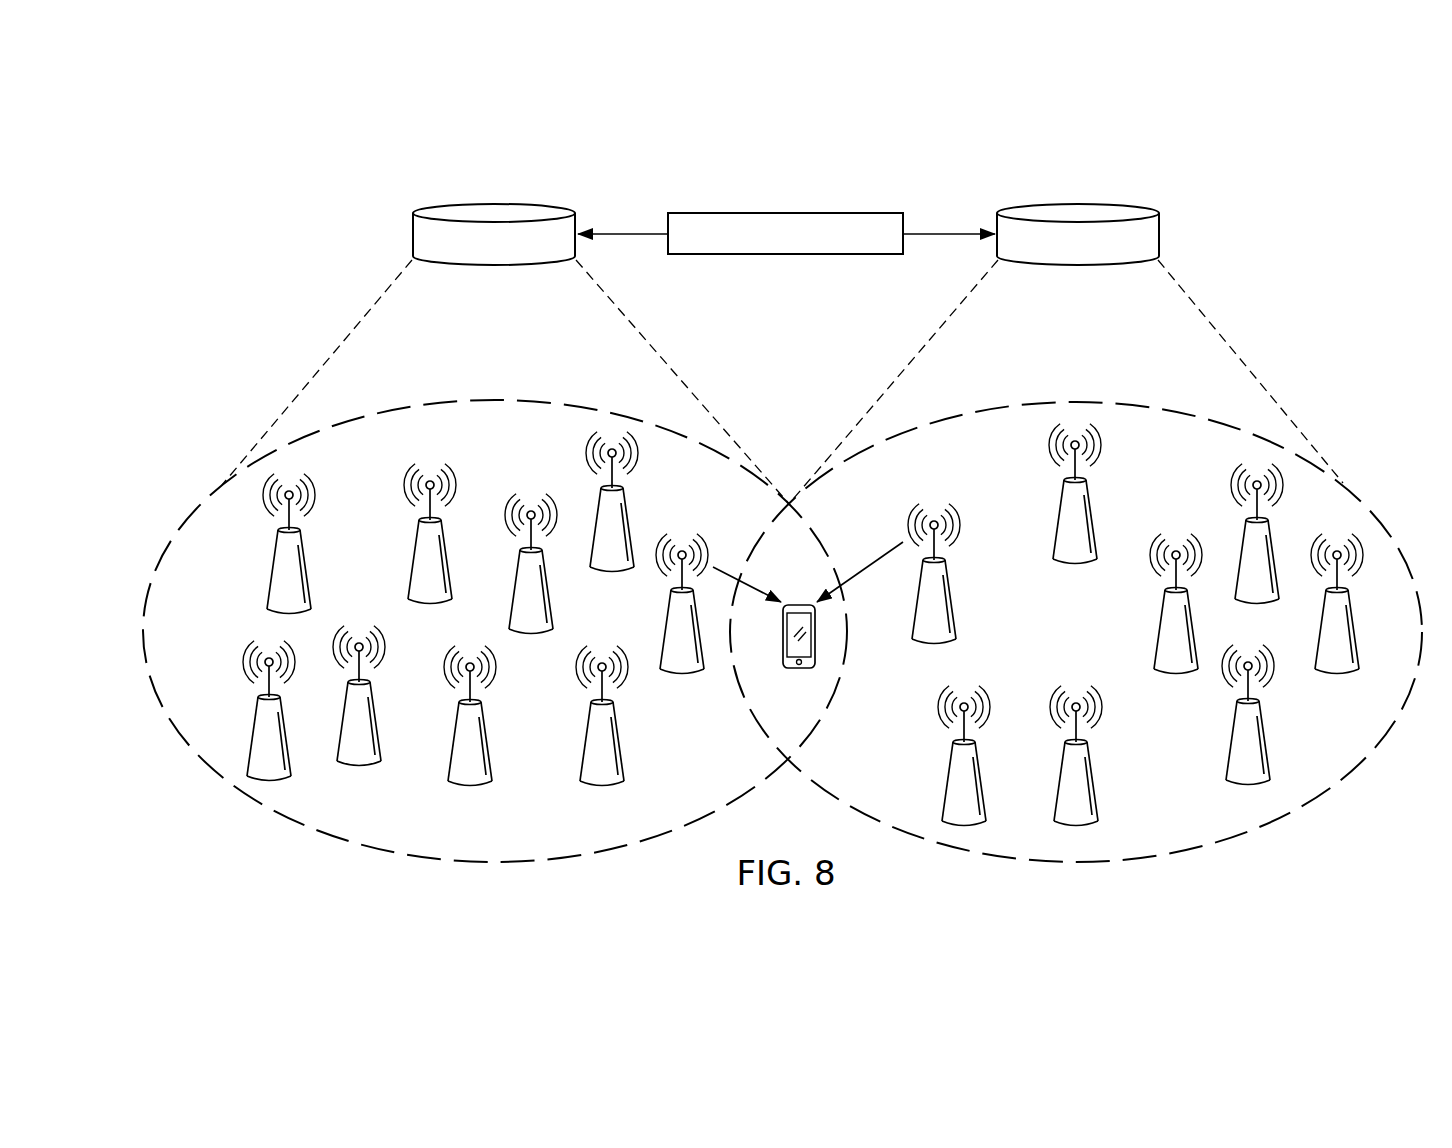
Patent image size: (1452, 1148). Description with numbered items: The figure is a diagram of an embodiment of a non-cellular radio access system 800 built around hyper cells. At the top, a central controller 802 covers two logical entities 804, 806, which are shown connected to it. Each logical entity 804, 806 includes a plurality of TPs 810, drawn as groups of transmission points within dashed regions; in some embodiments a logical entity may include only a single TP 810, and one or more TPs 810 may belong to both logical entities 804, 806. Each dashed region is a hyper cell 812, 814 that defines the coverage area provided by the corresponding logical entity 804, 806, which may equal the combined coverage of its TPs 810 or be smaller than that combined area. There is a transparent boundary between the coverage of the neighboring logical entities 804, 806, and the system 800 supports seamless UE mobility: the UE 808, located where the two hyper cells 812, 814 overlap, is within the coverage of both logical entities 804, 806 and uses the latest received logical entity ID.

The non-cellular radio access system 800 is at (630, 155).
The central controller 802 is at (786, 213).
The logical entity 804 is at (413, 226).
The logical entity 806 is at (1160, 226).
The UE 808 is at (797, 669).
The TP 810 is at (585, 738).
The hyper cell 812 is at (332, 838).
The hyper cell 814 is at (1264, 836).